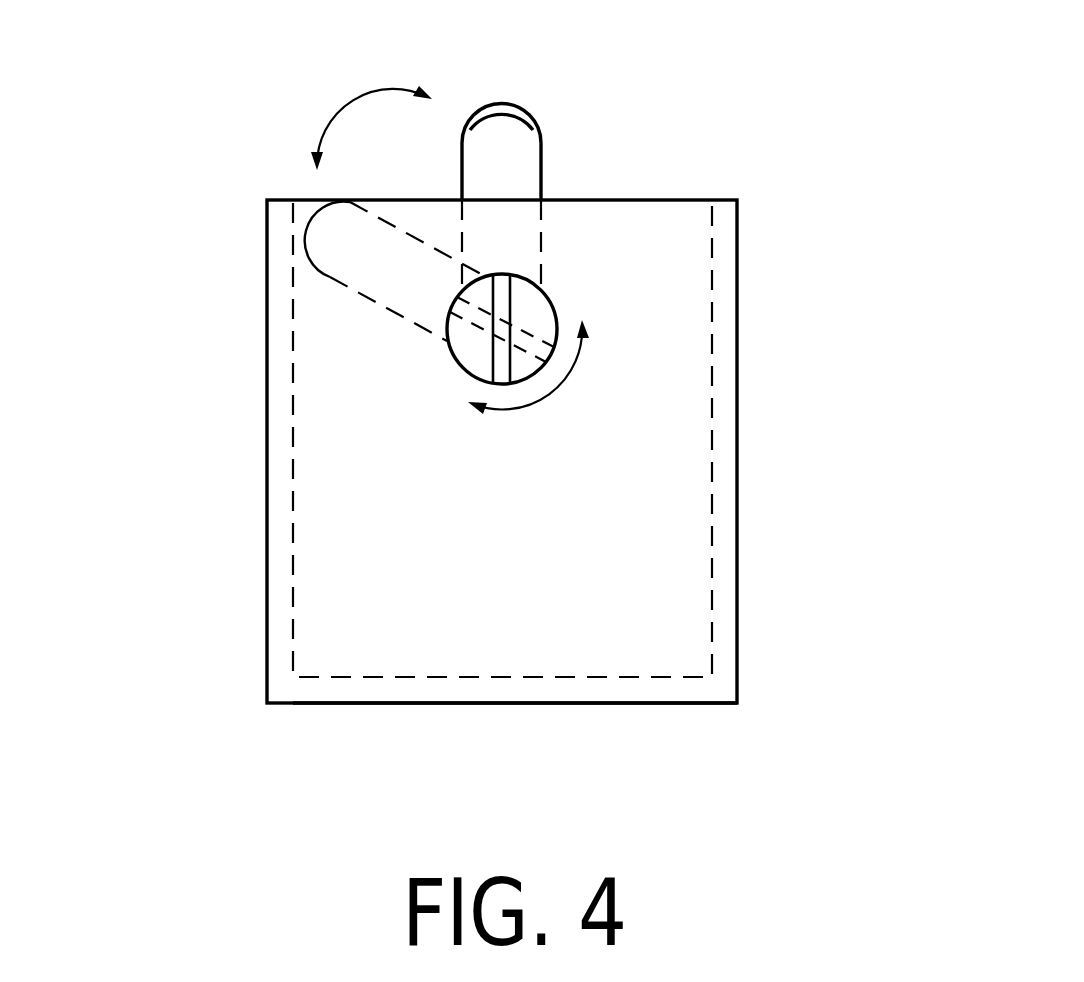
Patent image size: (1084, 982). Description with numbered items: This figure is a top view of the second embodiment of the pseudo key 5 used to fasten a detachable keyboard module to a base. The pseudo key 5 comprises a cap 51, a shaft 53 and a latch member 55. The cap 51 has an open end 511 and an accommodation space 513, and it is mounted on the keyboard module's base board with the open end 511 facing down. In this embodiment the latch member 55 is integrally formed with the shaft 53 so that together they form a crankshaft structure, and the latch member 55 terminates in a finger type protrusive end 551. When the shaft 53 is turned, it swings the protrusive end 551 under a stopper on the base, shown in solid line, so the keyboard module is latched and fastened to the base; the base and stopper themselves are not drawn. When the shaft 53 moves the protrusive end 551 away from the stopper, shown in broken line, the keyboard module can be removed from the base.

The pseudo key 5 is at (790, 387).
The cap 51 is at (720, 645).
The open end 511 is at (353, 200).
The accommodation space 513 is at (482, 583).
The shaft 53 is at (463, 373).
The latch member 55 is at (527, 240).
The protrusive end 551 is at (502, 118).